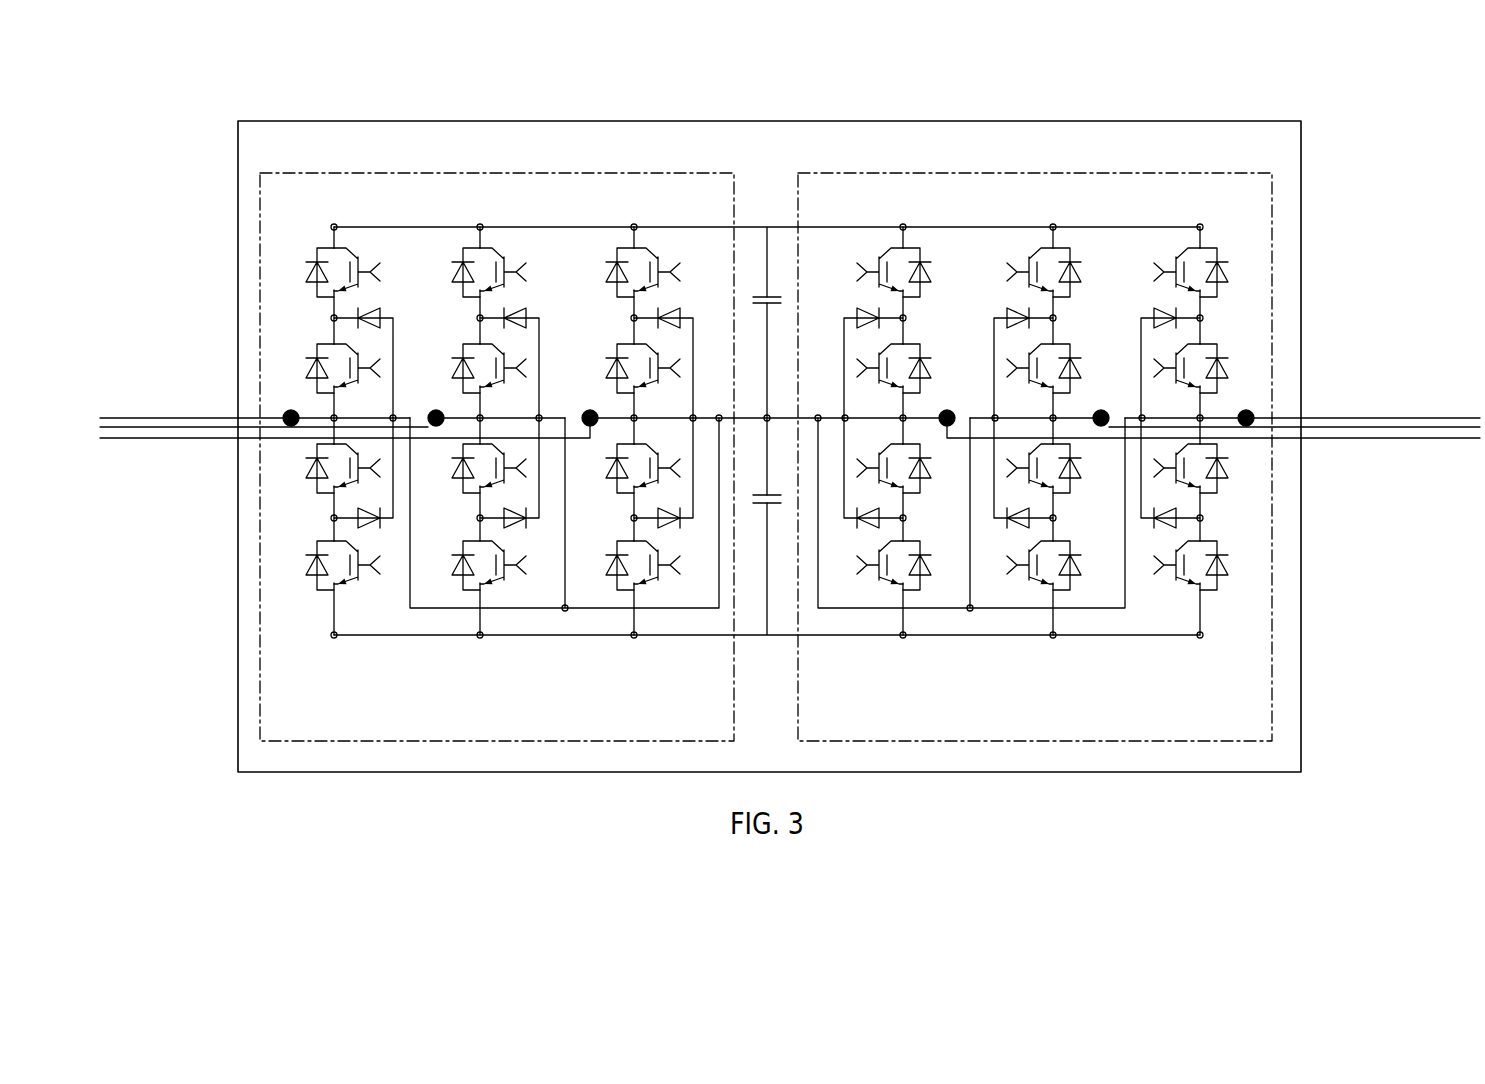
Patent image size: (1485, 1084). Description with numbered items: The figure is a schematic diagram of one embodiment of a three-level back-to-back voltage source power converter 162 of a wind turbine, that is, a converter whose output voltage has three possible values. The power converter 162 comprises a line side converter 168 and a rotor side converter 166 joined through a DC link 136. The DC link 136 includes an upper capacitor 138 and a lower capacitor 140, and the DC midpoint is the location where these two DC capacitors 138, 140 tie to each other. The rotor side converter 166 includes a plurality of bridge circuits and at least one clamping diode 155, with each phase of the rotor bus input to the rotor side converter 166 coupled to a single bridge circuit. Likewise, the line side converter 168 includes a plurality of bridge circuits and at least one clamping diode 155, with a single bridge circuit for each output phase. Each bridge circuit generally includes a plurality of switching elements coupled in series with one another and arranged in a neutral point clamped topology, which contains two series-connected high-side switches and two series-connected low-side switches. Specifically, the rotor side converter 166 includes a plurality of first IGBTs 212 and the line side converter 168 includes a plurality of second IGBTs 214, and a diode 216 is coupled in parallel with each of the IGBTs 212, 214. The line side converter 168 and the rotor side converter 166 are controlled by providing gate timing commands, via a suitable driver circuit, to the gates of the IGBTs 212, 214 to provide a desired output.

The DC link 136 is at (744, 227).
The upper capacitor 138 is at (780, 303).
The lower capacitor 140 is at (776, 508).
The clamping diode 155 is at (858, 303).
The power converter 162 is at (865, 130).
The rotor side converter 166 is at (1165, 173).
The line side converter 168 is at (603, 173).
The first IGBTs 212 is at (1192, 553).
The second IGBTs 214 is at (643, 553).
The diode 216 is at (1230, 571).